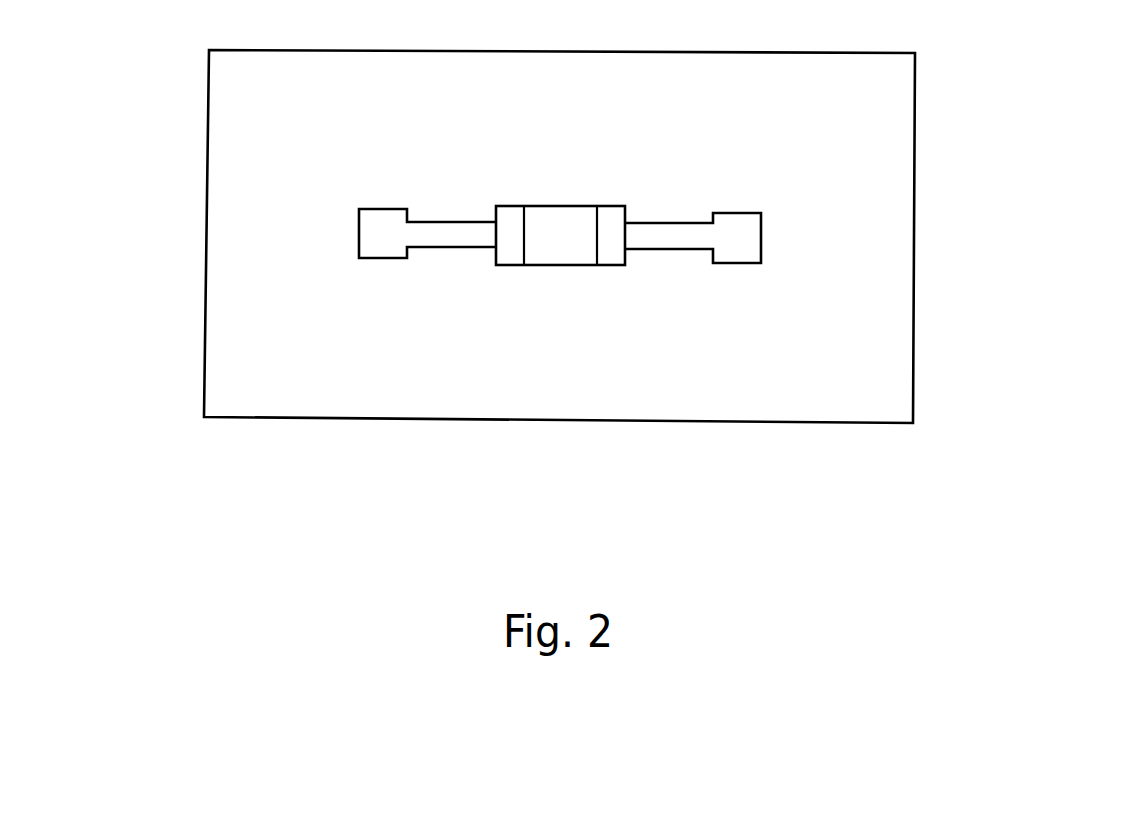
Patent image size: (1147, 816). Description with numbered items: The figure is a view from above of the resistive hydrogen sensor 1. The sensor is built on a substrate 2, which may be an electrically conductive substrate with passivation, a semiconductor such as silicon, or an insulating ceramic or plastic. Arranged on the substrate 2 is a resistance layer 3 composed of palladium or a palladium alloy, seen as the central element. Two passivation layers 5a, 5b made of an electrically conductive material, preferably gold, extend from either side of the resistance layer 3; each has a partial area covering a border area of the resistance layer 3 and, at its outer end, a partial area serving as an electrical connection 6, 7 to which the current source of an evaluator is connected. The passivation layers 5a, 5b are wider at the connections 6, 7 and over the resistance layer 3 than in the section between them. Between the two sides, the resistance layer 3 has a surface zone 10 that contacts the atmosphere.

The resistive hydrogen sensor 1 is at (1048, 614).
The substrate 2 is at (905, 192).
The resistance layer 3 is at (563, 255).
The passivation layer 5a is at (505, 220).
The passivation layer 5b is at (612, 217).
The electrical connection 6 is at (378, 232).
The electrical connection 7 is at (745, 240).
The surface zone 10 is at (560, 223).